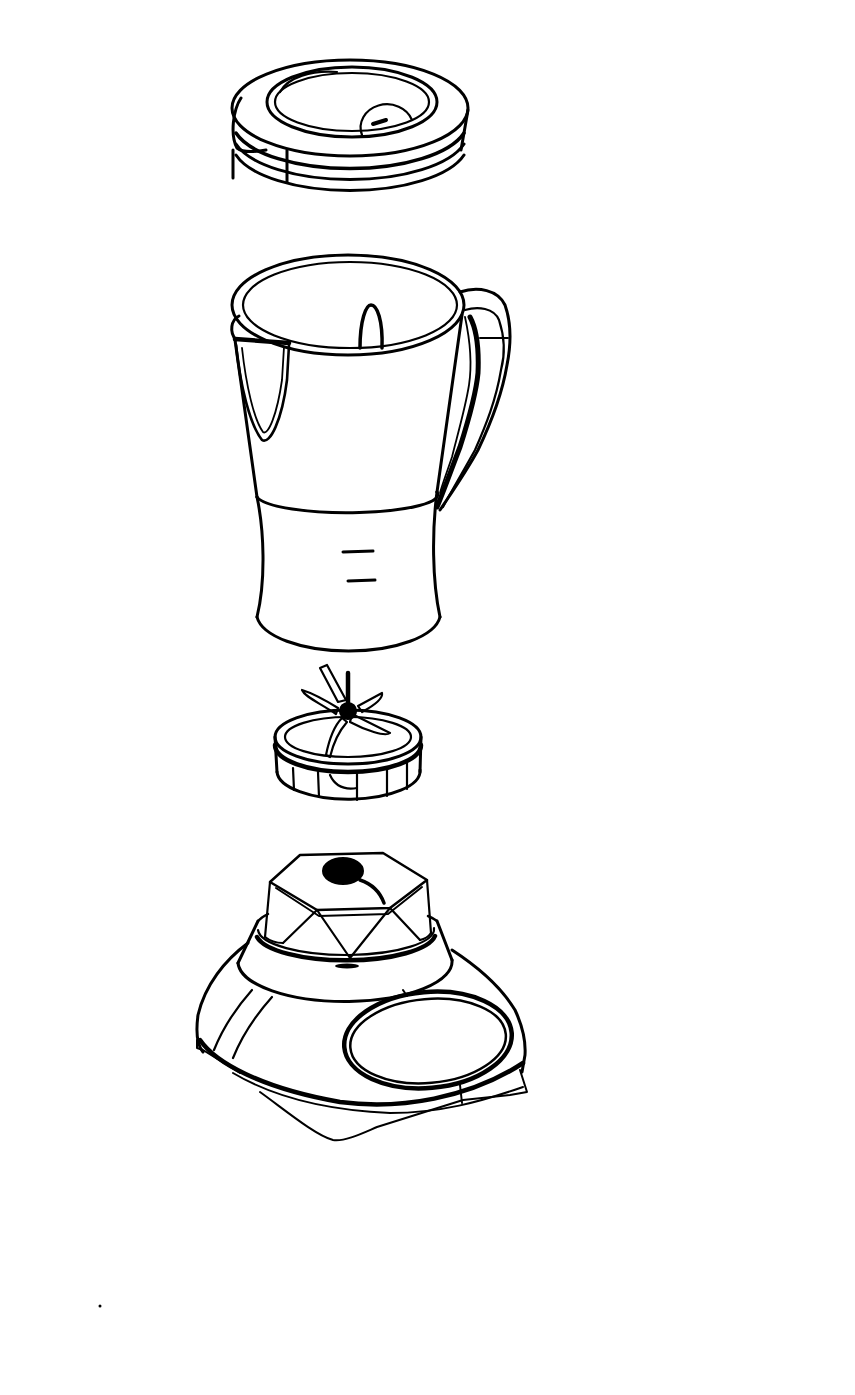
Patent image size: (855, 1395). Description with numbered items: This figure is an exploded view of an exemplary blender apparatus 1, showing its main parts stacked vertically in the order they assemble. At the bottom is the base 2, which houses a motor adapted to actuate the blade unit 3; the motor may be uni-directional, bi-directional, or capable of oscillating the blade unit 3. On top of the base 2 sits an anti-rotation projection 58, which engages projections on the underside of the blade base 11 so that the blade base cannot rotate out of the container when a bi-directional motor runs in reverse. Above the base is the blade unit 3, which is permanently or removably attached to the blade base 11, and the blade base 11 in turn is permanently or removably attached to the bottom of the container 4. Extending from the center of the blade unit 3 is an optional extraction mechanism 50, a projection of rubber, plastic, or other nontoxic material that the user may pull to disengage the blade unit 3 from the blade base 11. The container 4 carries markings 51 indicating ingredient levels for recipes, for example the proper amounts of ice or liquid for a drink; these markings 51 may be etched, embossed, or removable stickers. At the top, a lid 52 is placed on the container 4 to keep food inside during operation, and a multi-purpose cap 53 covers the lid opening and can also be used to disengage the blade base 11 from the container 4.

The blender apparatus 1 is at (727, 1100).
The base 2 is at (193, 1022).
The blade unit 3 is at (425, 738).
The container 4 is at (233, 427).
The blade base 11 is at (278, 775).
The extraction mechanism 50 is at (355, 683).
The markings 51 is at (382, 582).
The lid 52 is at (467, 125).
The multi-purpose cap 53 is at (385, 84).
The anti-rotation projection 58 is at (423, 873).